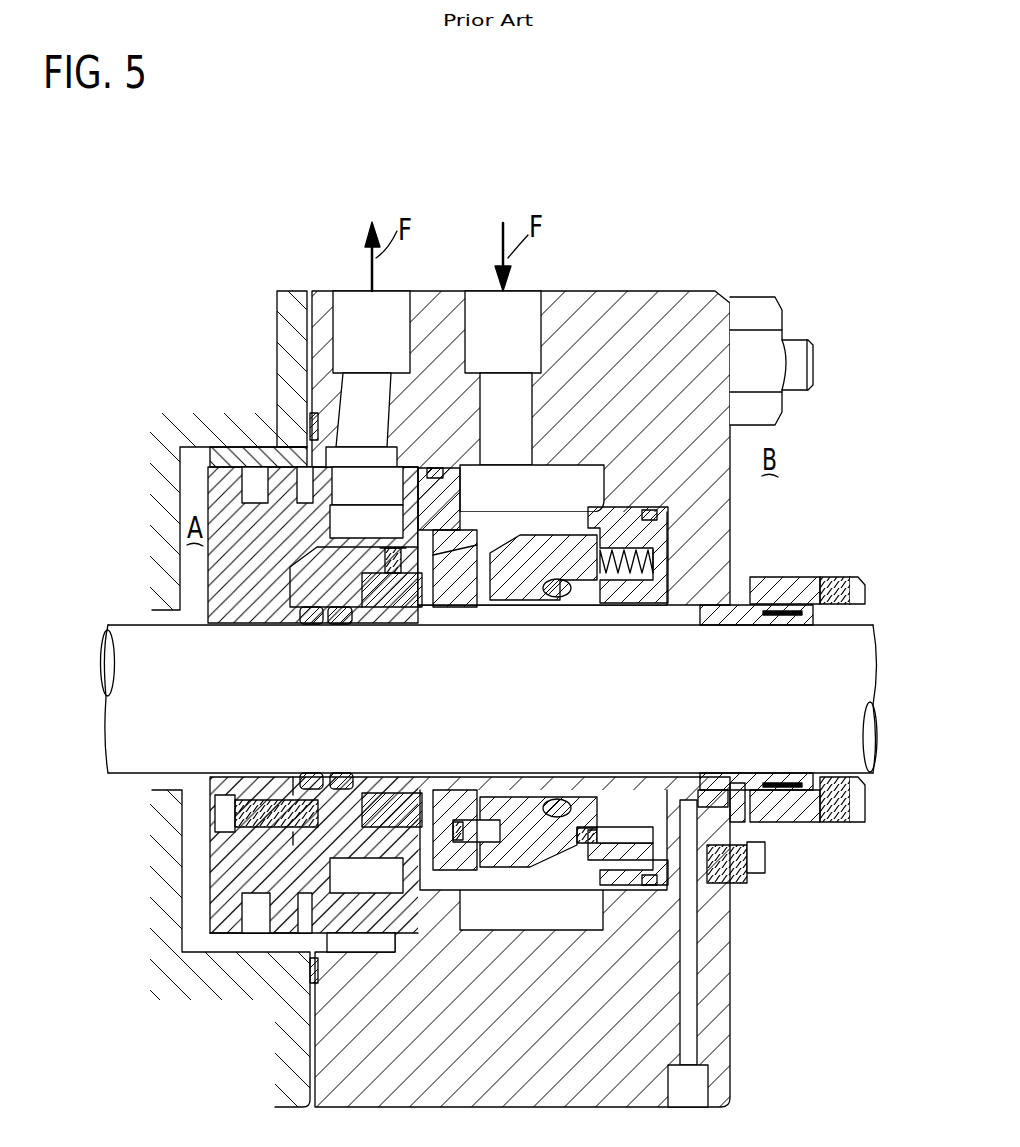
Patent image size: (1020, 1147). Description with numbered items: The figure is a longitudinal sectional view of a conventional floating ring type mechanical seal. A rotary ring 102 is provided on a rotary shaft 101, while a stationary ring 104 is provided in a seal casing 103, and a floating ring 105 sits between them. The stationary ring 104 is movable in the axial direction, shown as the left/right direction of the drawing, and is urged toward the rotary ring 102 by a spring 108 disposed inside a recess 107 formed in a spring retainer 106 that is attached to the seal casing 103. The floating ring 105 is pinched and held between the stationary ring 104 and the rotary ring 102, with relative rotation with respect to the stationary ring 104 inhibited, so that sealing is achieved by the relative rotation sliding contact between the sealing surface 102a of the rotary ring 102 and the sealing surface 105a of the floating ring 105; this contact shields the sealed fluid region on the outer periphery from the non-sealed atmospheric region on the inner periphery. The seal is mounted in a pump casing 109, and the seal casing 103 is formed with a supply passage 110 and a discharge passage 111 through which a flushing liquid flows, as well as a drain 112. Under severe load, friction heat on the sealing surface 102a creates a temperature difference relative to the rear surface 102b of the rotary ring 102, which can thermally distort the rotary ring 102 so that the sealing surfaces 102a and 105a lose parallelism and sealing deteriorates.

The rotary shaft 101 is at (120, 775).
The rotary ring 102 is at (372, 610).
The sealing surface 102a is at (433, 610).
The rear surface 102b is at (327, 630).
The seal casing 103 is at (640, 292).
The stationary ring 104 is at (503, 608).
The floating ring 105 is at (467, 610).
The sealing surface 105a is at (398, 626).
The spring retainer 106 is at (655, 548).
The recess 107 is at (630, 580).
The spring 108 is at (613, 582).
The pump casing 109 is at (292, 307).
The supply passage 110 is at (520, 308).
The discharge passage 111 is at (348, 307).
The drain 112 is at (690, 952).